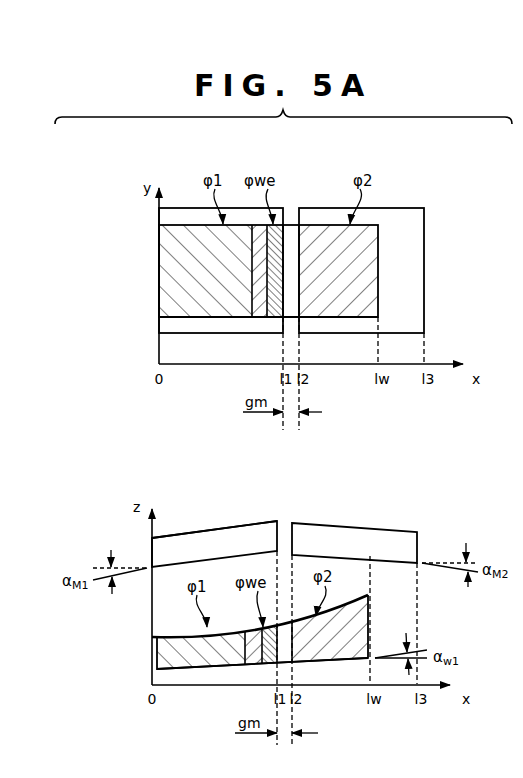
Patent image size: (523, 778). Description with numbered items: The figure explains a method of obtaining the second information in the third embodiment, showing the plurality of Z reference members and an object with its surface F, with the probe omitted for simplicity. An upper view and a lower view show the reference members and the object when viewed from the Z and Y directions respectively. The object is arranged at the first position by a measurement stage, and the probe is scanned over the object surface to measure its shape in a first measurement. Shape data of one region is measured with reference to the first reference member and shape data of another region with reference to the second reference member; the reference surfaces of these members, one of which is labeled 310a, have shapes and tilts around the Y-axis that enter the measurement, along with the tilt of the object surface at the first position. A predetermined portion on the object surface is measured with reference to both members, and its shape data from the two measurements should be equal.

The magnet facing surface 310a is at (165, 536).